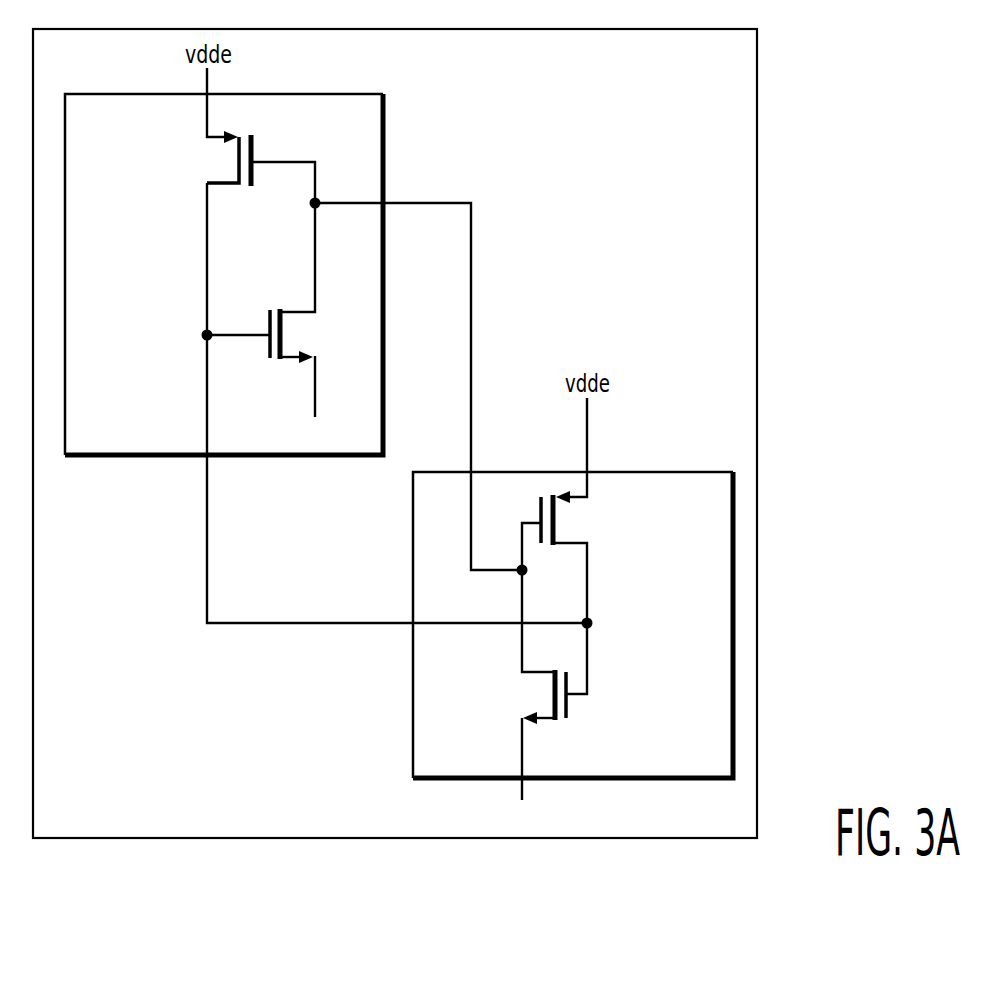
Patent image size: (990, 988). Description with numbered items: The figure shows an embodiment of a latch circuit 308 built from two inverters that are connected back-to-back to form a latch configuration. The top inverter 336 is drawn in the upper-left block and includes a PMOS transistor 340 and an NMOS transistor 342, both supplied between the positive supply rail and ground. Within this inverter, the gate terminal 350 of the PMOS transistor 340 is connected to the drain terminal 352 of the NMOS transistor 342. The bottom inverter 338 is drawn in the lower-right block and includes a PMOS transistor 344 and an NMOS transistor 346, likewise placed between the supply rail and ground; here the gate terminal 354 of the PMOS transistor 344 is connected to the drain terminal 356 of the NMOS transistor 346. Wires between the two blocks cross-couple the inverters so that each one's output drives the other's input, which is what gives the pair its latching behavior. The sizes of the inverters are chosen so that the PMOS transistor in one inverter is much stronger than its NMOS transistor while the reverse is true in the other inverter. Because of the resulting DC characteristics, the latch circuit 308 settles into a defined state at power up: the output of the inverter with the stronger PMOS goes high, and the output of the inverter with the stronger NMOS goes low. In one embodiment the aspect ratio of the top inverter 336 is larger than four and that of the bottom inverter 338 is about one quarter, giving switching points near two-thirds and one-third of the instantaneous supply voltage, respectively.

The latch circuit 308 is at (757, 112).
The top inverter 336 is at (385, 118).
The bottom inverter 338 is at (686, 471).
The PMOS transistor 340 is at (251, 146).
The NMOS transistor 342 is at (268, 348).
The PMOS transistor 344 is at (540, 500).
The NMOS transistor 346 is at (568, 710).
The gate terminal 350 is at (270, 164).
The drain terminal 352 is at (299, 308).
The gate terminal 354 is at (538, 520).
The drain terminal 356 is at (544, 670).